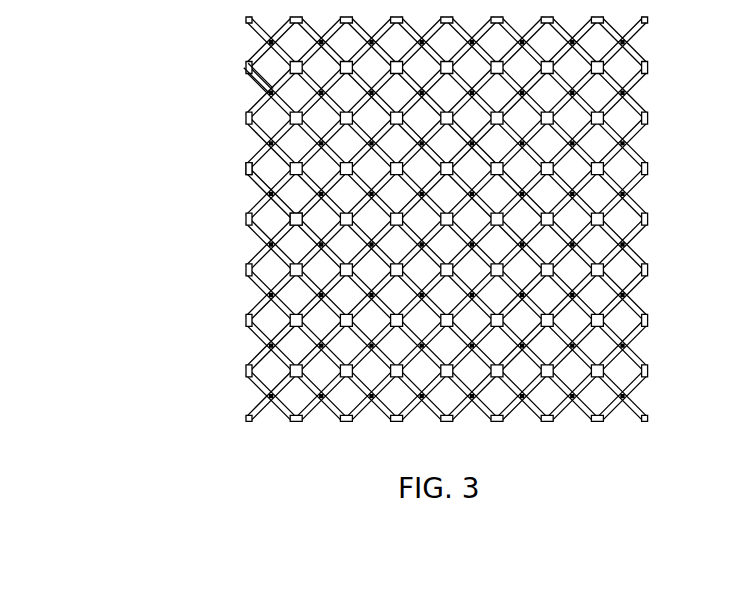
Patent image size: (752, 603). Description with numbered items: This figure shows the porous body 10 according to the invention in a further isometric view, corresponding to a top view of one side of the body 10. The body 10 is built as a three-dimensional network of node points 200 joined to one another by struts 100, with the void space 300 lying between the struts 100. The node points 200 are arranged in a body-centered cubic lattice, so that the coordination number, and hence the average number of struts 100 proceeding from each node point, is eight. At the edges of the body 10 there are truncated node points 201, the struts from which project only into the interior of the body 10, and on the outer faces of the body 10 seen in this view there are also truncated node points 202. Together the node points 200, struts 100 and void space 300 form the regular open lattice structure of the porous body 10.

The porous body 10 is at (188, 313).
The struts 100 is at (252, 84).
The node points 200 is at (268, 42).
The truncated node points 201 is at (246, 168).
The truncated node points 202 is at (291, 218).
The void space 300 is at (273, 119).